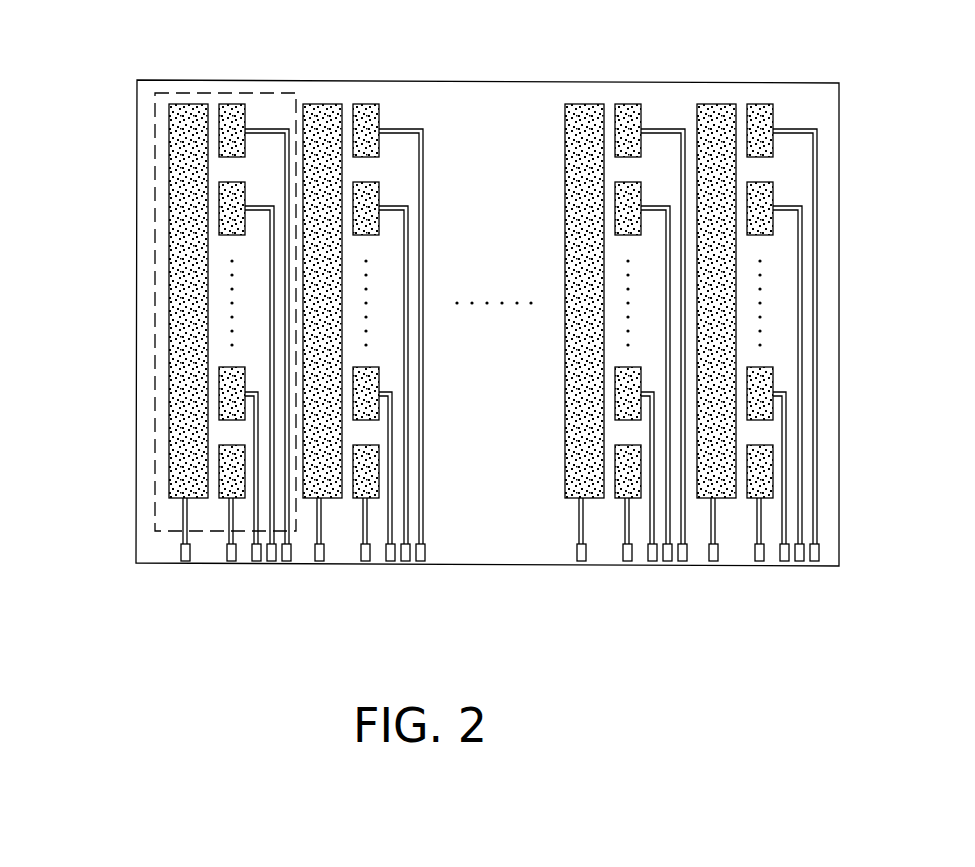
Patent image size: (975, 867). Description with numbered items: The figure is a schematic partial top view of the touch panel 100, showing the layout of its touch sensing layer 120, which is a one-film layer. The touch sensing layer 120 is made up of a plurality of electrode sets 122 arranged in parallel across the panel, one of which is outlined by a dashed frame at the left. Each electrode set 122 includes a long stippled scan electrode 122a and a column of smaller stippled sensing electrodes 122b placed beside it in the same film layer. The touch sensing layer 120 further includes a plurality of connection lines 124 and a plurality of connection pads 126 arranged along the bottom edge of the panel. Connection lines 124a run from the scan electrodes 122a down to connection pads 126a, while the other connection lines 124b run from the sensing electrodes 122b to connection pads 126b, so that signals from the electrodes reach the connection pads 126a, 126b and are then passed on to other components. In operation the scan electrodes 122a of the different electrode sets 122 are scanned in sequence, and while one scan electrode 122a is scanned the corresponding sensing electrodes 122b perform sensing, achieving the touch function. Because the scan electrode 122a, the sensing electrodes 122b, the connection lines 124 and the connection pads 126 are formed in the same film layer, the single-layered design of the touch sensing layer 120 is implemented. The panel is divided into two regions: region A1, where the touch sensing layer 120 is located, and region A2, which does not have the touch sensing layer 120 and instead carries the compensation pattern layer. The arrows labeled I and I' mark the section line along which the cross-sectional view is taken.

The touch panel 100 is at (814, 715).
The touch sensing layer 120 is at (168, 205).
The electrode set 122 is at (155, 140).
The scan electrode 122a is at (188, 106).
The sensing electrode 122b is at (232, 106).
The connection lines 124 is at (67, 465).
The connection line 124a is at (183, 508).
The connection line 124b is at (228, 523).
The connection pads 126 is at (263, 633).
The connection pad 126a is at (186, 563).
The connection pad 126b is at (232, 563).
The region A1 is at (617, 117).
The region A2 is at (679, 119).
The line I-I' I is at (628, 77).
The line I- I' is at (657, 74).